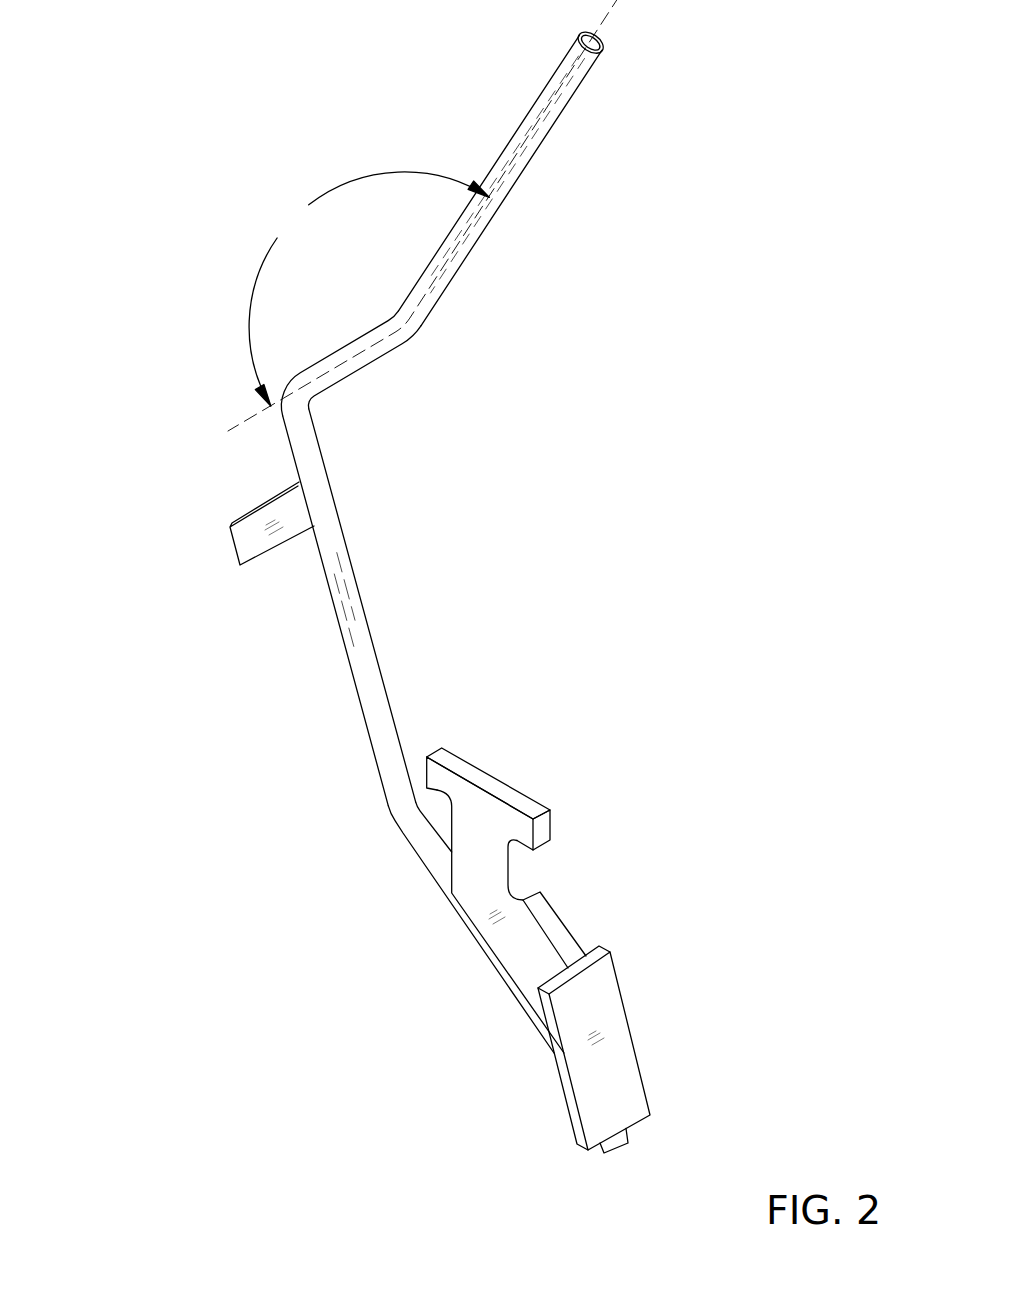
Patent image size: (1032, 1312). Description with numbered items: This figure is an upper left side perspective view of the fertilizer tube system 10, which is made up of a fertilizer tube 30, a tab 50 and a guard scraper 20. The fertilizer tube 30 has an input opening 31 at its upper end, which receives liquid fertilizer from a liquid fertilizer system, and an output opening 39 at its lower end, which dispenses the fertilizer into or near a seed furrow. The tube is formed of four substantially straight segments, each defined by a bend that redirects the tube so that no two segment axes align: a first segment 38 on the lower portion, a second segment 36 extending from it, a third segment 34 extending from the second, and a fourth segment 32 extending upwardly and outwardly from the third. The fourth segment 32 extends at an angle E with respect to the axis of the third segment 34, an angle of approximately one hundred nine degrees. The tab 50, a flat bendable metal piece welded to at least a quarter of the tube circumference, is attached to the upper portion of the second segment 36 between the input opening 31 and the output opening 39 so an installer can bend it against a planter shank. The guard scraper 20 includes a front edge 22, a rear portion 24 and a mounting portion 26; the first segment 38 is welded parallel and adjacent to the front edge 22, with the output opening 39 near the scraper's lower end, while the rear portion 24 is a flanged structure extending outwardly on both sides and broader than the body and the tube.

The fertilizer tube system 10 is at (184, 128).
The guard scraper 20 is at (565, 923).
The front edge 22 is at (512, 1003).
The rear portion 24 is at (613, 1008).
The mounting portion 26 is at (505, 782).
The fertilizer tube 30 is at (376, 647).
The input opening 31 is at (604, 40).
The fourth segment 32 is at (549, 147).
The third segment 34 is at (358, 368).
The second segment 36 is at (337, 512).
The first segment 38 is at (466, 937).
The output opening 39 is at (614, 1143).
The tab 50 is at (230, 537).